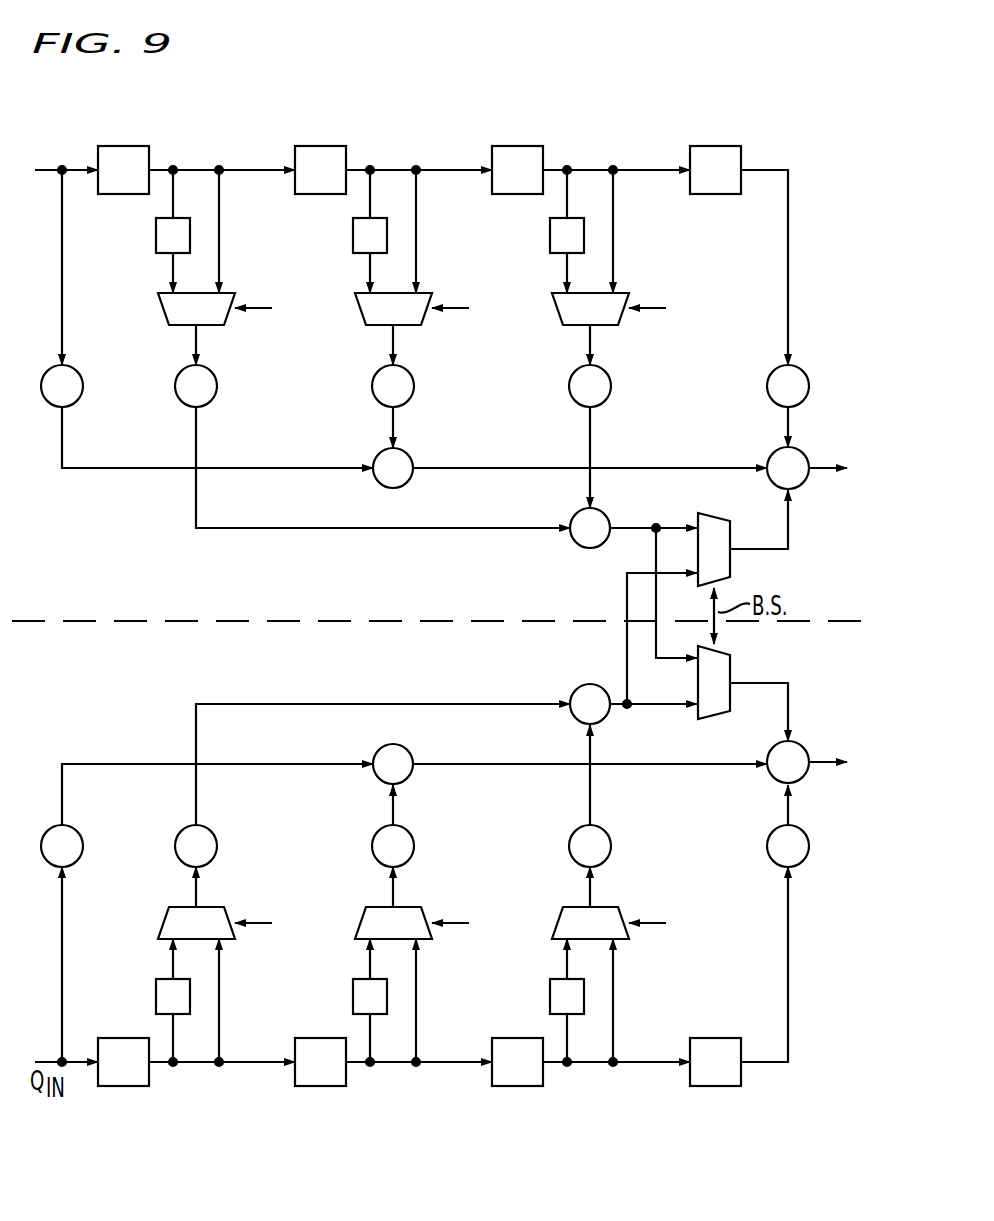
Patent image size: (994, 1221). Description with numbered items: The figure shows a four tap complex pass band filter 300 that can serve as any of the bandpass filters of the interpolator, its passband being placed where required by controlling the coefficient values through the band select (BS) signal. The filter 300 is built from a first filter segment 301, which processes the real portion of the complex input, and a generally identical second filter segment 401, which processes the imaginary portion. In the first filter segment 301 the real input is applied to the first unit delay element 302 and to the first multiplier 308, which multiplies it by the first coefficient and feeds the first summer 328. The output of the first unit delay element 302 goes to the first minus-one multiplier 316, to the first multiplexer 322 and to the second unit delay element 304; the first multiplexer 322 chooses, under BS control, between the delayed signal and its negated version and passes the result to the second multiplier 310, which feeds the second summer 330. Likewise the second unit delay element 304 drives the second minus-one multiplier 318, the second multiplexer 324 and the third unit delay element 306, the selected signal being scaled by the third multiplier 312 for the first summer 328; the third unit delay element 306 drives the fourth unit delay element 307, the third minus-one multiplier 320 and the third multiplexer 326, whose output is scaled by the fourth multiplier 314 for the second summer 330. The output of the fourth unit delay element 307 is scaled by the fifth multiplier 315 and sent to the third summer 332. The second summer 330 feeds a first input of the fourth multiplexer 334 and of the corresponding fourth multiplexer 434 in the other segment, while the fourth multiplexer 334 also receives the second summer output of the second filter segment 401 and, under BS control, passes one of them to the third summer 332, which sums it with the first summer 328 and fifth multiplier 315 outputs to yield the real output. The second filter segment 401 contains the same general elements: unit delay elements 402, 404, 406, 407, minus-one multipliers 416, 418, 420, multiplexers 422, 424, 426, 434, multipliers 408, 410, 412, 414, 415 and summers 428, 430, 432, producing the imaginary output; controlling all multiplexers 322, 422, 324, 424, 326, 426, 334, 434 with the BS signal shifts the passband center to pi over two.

The four tap complex filter 300 is at (272, 112).
The first filter segment 301 is at (135, 602).
The second filter segment 401 is at (135, 675).
The first unit delay element 302 is at (120, 146).
The second unit delay element 304 is at (318, 146).
The third unit delay element 306 is at (514, 146).
The fourth unit delay element 307 is at (714, 146).
The first −1 multiplier 316 is at (157, 240).
The second −1 multiplier 318 is at (354, 240).
The third −1 multiplier 320 is at (551, 240).
The first multiplexer 322 is at (160, 307).
The second multiplexer 324 is at (362, 317).
The third multiplexer 326 is at (559, 317).
The first multiplier 308 is at (84, 384).
The second multiplier 310 is at (176, 392).
The third multiplier 312 is at (373, 392).
The fourth multiplier 314 is at (570, 392).
The fifth multiplier 315 is at (768, 392).
The first summer 328 is at (380, 485).
The second summer 330 is at (578, 545).
The third summer 332 is at (770, 480).
The fourth multiplexer 334 is at (731, 571).
The delay element 402 is at (150, 1079).
The delay element 404 is at (347, 1079).
The delay element 406 is at (544, 1079).
The delay element 407 is at (742, 1079).
The negation (-1) element 416 is at (157, 993).
The negation (-1) element 418 is at (354, 993).
The negation (-1) element 420 is at (551, 993).
The first multiplexer of second filter segment 422 is at (162, 921).
The second multiplexer of second filter segment 424 is at (362, 921).
The third multiplexer of second filter segment 426 is at (558, 921).
The coefficient multiplier C0 408 is at (85, 846).
The coefficient multiplier C1 410 is at (176, 839).
The coefficient multiplier C2 412 is at (373, 839).
The coefficient multiplier C3 414 is at (570, 839).
The coefficient multiplier C4 415 is at (768, 839).
The summer 428 is at (380, 748).
The summer 430 is at (578, 689).
The output summer 432 is at (770, 751).
The fourth multiplexer of second filter segment 434 is at (731, 672).